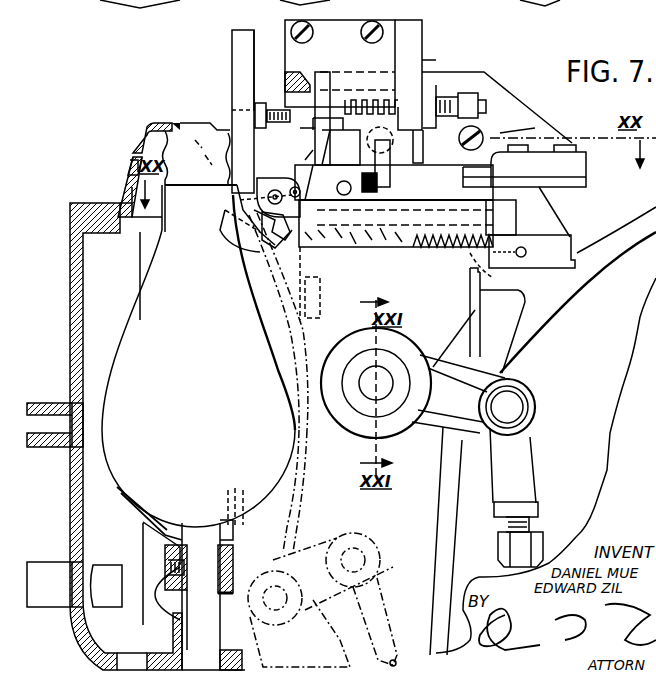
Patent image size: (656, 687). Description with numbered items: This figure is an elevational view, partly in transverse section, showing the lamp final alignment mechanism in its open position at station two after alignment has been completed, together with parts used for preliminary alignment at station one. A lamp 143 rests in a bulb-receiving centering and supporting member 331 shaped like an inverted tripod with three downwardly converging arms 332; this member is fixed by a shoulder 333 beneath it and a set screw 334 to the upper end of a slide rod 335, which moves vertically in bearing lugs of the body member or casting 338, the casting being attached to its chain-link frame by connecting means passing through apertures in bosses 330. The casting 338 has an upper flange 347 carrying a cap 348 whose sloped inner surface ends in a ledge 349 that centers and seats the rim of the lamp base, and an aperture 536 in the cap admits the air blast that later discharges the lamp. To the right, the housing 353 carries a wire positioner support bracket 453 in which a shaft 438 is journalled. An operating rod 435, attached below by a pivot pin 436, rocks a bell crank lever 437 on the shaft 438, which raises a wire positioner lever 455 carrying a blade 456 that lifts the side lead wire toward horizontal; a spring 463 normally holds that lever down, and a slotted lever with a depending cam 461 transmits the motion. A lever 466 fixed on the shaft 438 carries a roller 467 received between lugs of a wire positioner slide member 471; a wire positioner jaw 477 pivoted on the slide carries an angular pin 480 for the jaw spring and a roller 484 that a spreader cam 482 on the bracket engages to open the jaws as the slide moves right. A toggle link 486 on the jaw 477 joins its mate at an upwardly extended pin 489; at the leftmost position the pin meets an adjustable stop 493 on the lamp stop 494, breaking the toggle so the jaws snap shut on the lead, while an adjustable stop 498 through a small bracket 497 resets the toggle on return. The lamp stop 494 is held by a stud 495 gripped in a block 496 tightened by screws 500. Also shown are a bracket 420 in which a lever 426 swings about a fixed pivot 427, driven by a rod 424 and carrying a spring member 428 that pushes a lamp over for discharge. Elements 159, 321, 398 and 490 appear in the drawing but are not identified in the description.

The lamp 143 is at (128, 358).
The lever 159 is at (250, 230).
The threaded fitting 321 is at (238, 540).
The boss 330 is at (50, 568).
The bulb-receiving centering and supporting member 331 is at (131, 517).
The downwardly converging arms 332 is at (143, 526).
The shoulder 333 is at (178, 610).
The set screw 334 is at (126, 608).
The slide rod 335 is at (222, 637).
The body member or casting 338 is at (72, 313).
The flange 347 is at (103, 232).
The cap 348 is at (135, 138).
The ledge 349 is at (170, 122).
The housing 353 is at (602, 262).
The frame part 398 is at (543, 0).
The bracket 420 is at (321, 602).
The rod 424 is at (380, 603).
The lever 426 is at (316, 545).
The fixed pivot 427 is at (272, 586).
The spring member 428 is at (298, 453).
The operating rod 435 is at (532, 473).
The pivot pin 436 is at (475, 331).
The bell crank lever 437 is at (442, 434).
The shaft 438 is at (392, 376).
The wire positioner support bracket 453 is at (533, 130).
The wire positioner lever 455 is at (262, 250).
The blade 456 is at (262, 242).
The depending cam 461 is at (318, 257).
The spring 463 is at (488, 272).
The lever 466 is at (278, 366).
The roller 467 is at (468, 275).
The wire positioner slide member 471 is at (514, 216).
The wire positioner jaw 477 is at (257, 200).
The angular pin 480 is at (458, 137).
The spreader cam 482 is at (586, 182).
The roller 484 is at (481, 121).
The link 486 is at (316, 150).
The pin 489 is at (318, 112).
The wedge 490 is at (288, 78).
The adjustable stop 493 is at (258, 104).
The lamp stop 494 is at (232, 34).
The stud 495 is at (256, 45).
The block 496 is at (412, 22).
The small bracket 497 is at (432, 40).
The adjustable stop 498 is at (468, 74).
The screws 500 is at (310, 20).
The aperture 536 is at (128, 166).